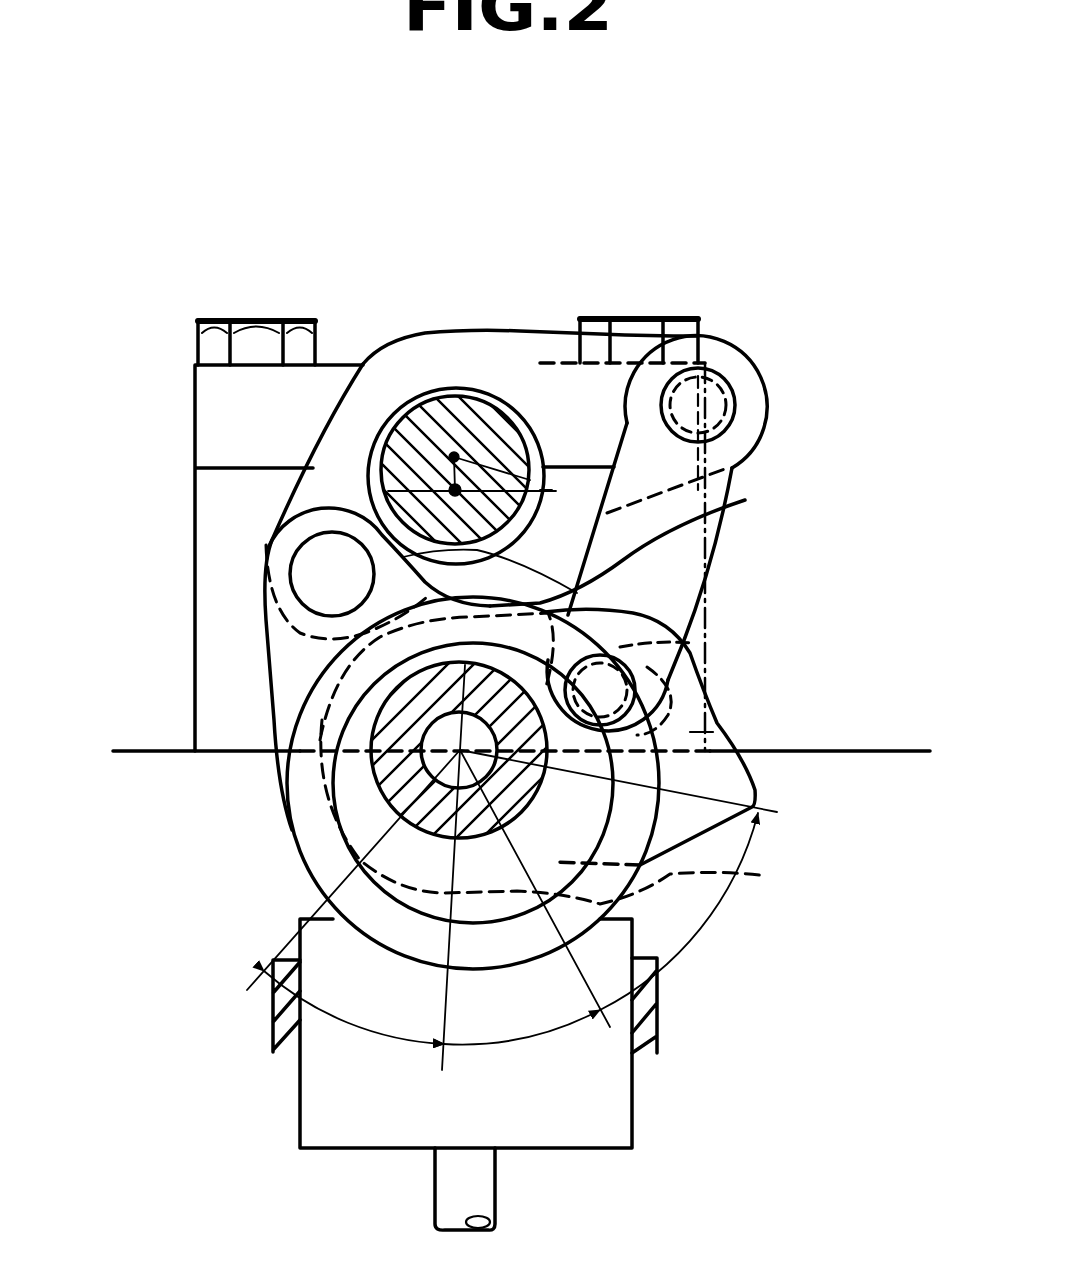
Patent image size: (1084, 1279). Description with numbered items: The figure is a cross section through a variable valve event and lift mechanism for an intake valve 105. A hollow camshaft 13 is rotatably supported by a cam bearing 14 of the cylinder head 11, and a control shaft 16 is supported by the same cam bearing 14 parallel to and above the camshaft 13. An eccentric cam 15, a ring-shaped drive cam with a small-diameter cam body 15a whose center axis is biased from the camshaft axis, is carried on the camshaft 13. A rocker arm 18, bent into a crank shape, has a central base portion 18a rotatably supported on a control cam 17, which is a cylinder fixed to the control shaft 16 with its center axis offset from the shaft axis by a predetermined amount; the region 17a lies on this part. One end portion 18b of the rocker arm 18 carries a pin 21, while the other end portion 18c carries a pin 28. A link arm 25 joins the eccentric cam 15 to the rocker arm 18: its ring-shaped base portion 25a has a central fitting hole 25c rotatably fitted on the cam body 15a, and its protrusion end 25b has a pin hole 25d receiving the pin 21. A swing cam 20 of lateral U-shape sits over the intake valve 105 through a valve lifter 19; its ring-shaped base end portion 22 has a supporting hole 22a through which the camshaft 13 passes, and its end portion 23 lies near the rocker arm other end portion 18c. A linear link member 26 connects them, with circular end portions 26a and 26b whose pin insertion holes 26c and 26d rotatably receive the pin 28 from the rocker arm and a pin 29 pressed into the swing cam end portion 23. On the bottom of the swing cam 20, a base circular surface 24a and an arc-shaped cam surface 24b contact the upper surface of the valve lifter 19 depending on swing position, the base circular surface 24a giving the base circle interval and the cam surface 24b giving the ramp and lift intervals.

The cylinder head 11 is at (858, 750).
The camshaft 13 is at (335, 770).
The cam bearing 14 is at (183, 473).
The eccentric cam 15 is at (647, 888).
The cam body 15a is at (477, 900).
The control shaft 16 is at (477, 433).
The control cam 17 is at (547, 535).
The link end 17a is at (577, 593).
The rocker arm 18 is at (410, 353).
The base portion 18a is at (433, 353).
The one end portion 18b is at (313, 503).
The other end portion 18c is at (640, 347).
The valve lifter 19 is at (598, 1100).
The swing cam 20 is at (765, 790).
The pin 21 is at (330, 550).
The base end portion 22 is at (273, 693).
The supporting hole 22a is at (495, 818).
The end portion 23 is at (700, 734).
The base circular surface 24a is at (333, 877).
The cam surface 24b is at (750, 877).
The link arm 25 is at (280, 810).
The base portion 25a is at (323, 830).
The protrusion end 25b is at (290, 657).
The fitting hole 25c is at (627, 913).
The pin hole 25d is at (293, 570).
The link member 26 is at (683, 555).
The one end portion 26a is at (767, 383).
The other end portion 26b is at (680, 673).
The pin insertion hole 26c is at (718, 368).
The pin insertion hole 26d is at (693, 643).
The pin 28 is at (735, 423).
The pin 29 is at (707, 600).
The intake valve 105 is at (477, 1192).